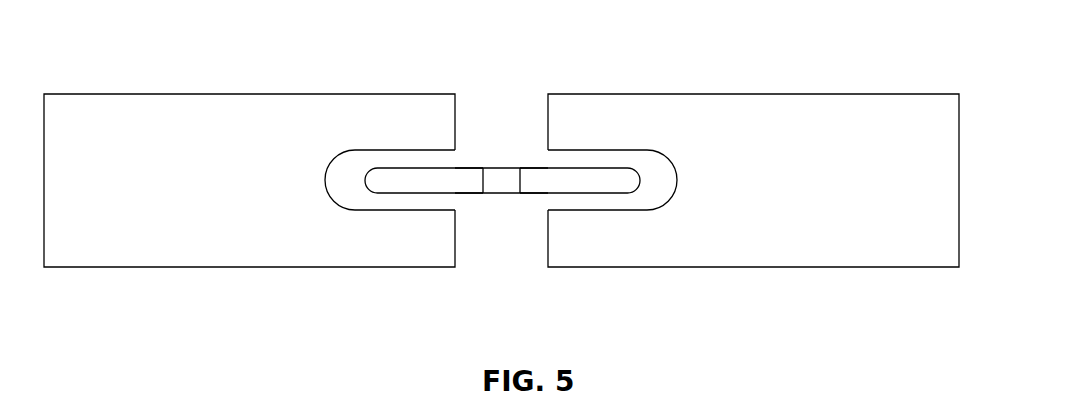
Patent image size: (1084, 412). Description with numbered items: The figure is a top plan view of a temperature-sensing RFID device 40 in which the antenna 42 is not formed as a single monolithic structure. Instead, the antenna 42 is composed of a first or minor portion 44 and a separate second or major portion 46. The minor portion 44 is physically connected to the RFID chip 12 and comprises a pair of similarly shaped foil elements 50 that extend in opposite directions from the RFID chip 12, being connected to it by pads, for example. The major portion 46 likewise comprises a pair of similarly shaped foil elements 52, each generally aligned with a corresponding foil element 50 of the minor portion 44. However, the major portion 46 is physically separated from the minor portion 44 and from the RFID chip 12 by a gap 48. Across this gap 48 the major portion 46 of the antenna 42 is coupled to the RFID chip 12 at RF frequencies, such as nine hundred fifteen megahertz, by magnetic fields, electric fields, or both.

The RFID chip 12 is at (503, 167).
The temperature-sensing RFID device 40 is at (315, 307).
The antenna 42 is at (659, 268).
The minor portion 44 is at (536, 166).
The major portion 46 is at (297, 93).
The gap 48 is at (354, 195).
The foil elements 50 is at (462, 195).
The foil elements 52 is at (501, 183).